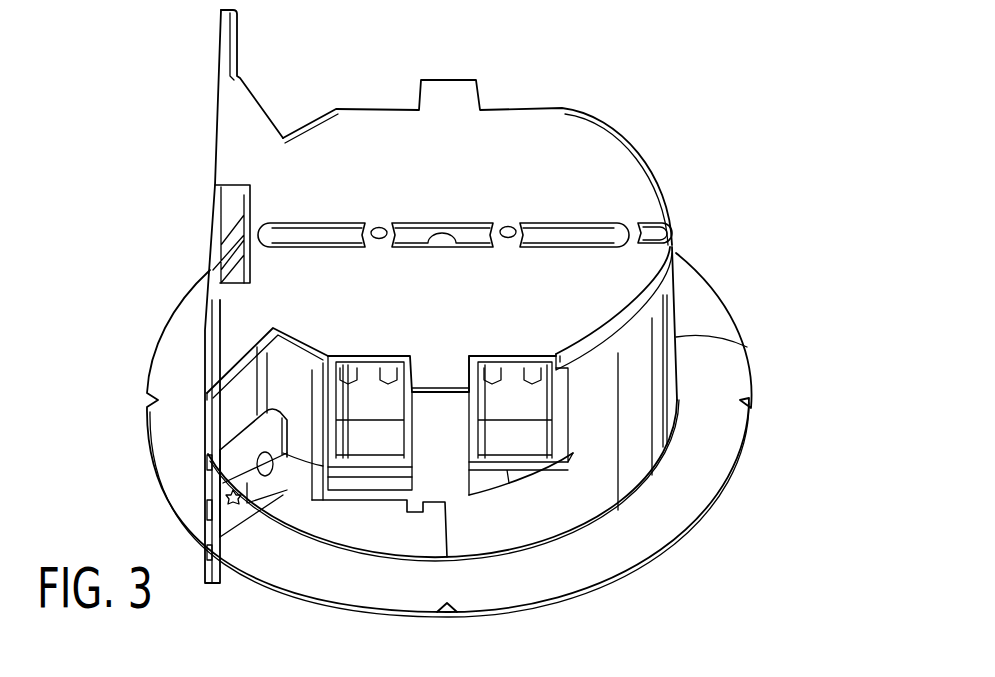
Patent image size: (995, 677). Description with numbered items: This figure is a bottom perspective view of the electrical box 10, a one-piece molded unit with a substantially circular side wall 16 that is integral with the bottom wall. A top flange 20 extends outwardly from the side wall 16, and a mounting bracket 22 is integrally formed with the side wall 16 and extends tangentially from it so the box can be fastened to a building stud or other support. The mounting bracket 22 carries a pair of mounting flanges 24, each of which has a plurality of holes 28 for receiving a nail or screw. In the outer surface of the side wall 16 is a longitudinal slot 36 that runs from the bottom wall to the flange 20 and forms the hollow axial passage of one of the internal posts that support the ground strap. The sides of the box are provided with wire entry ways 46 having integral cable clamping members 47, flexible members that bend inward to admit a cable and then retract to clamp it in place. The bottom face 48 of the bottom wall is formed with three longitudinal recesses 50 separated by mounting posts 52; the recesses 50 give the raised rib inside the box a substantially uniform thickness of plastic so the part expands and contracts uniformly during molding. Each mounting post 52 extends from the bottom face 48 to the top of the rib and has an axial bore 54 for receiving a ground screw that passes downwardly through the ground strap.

The electrical box 10 is at (633, 113).
The side wall 16 is at (676, 338).
The top flange 20 is at (705, 310).
The mounting bracket 22 is at (221, 37).
The mounting flange 24 is at (237, 47).
The holes 28 is at (238, 502).
The longitudinal slot 36 is at (685, 237).
The wire entry ways 46 is at (484, 372).
The cable clamping members 47 is at (511, 392).
The bottom face 48 is at (527, 137).
The recess 50 is at (323, 232).
The mounting post 52 is at (410, 228).
The axial bore 54 is at (380, 242).